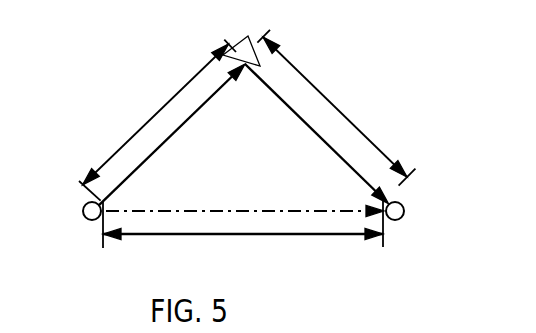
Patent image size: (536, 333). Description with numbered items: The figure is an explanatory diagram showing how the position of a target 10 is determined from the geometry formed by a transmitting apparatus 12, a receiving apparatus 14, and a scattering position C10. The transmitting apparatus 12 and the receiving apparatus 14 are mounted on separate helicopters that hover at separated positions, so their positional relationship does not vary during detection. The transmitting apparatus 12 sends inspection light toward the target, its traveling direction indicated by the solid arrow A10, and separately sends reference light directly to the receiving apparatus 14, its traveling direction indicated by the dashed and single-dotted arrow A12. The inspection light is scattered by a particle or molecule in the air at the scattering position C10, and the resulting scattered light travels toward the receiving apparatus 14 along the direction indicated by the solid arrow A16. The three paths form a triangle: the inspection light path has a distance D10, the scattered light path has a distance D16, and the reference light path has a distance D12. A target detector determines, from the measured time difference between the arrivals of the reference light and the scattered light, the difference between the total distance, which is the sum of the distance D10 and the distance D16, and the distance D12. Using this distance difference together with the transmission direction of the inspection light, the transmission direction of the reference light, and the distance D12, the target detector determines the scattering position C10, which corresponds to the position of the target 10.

The target 10 is at (246, 35).
The transmitting apparatus 12 is at (87, 221).
The receiving apparatus 14 is at (404, 211).
The traveling direction of the inspection light A10 is at (138, 172).
The traveling direction of the reference light A12 is at (262, 210).
The traveling direction of the scattered light A16 is at (301, 119).
The scattering position C10 is at (245, 76).
The distance of the path of the inspection light D10 is at (155, 114).
The distance of the path of the reference light D12 is at (257, 236).
The distance of the path of the scattered light D16 is at (367, 110).